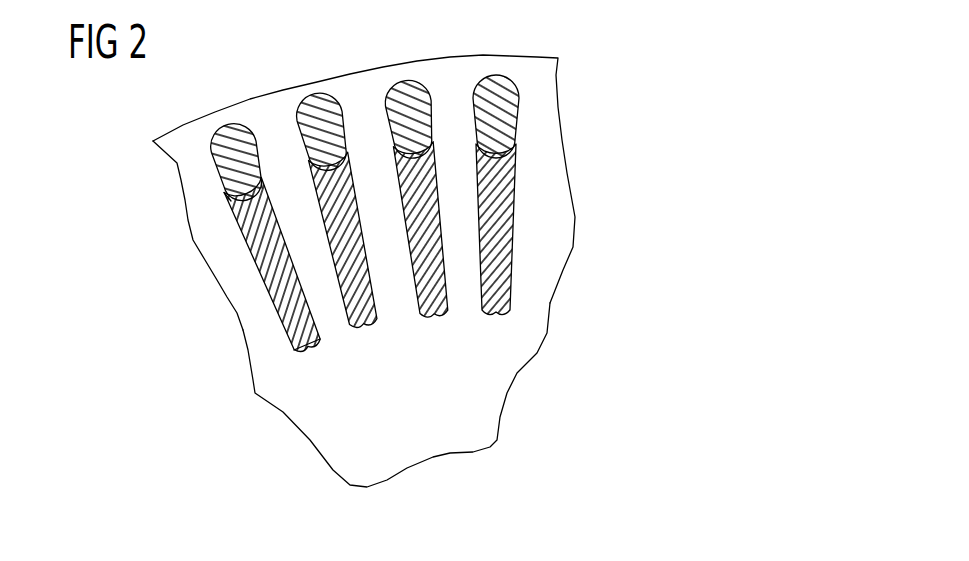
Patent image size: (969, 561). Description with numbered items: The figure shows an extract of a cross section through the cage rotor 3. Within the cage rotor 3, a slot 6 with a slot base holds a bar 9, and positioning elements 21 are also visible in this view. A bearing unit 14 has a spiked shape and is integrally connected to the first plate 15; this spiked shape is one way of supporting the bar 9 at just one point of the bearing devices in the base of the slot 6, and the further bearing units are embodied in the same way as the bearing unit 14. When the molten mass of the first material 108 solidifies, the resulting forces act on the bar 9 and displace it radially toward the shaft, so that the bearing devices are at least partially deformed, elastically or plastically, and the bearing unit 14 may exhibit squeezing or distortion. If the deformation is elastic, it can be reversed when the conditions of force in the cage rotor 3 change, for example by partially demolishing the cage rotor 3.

The cage rotor 3 is at (594, 105).
The slot 6 is at (277, 270).
The bar 9 is at (265, 275).
The bearing unit 14 is at (310, 350).
The first plate 15 is at (505, 347).
The positioning elements 21 is at (271, 180).
The first material 108 is at (231, 138).